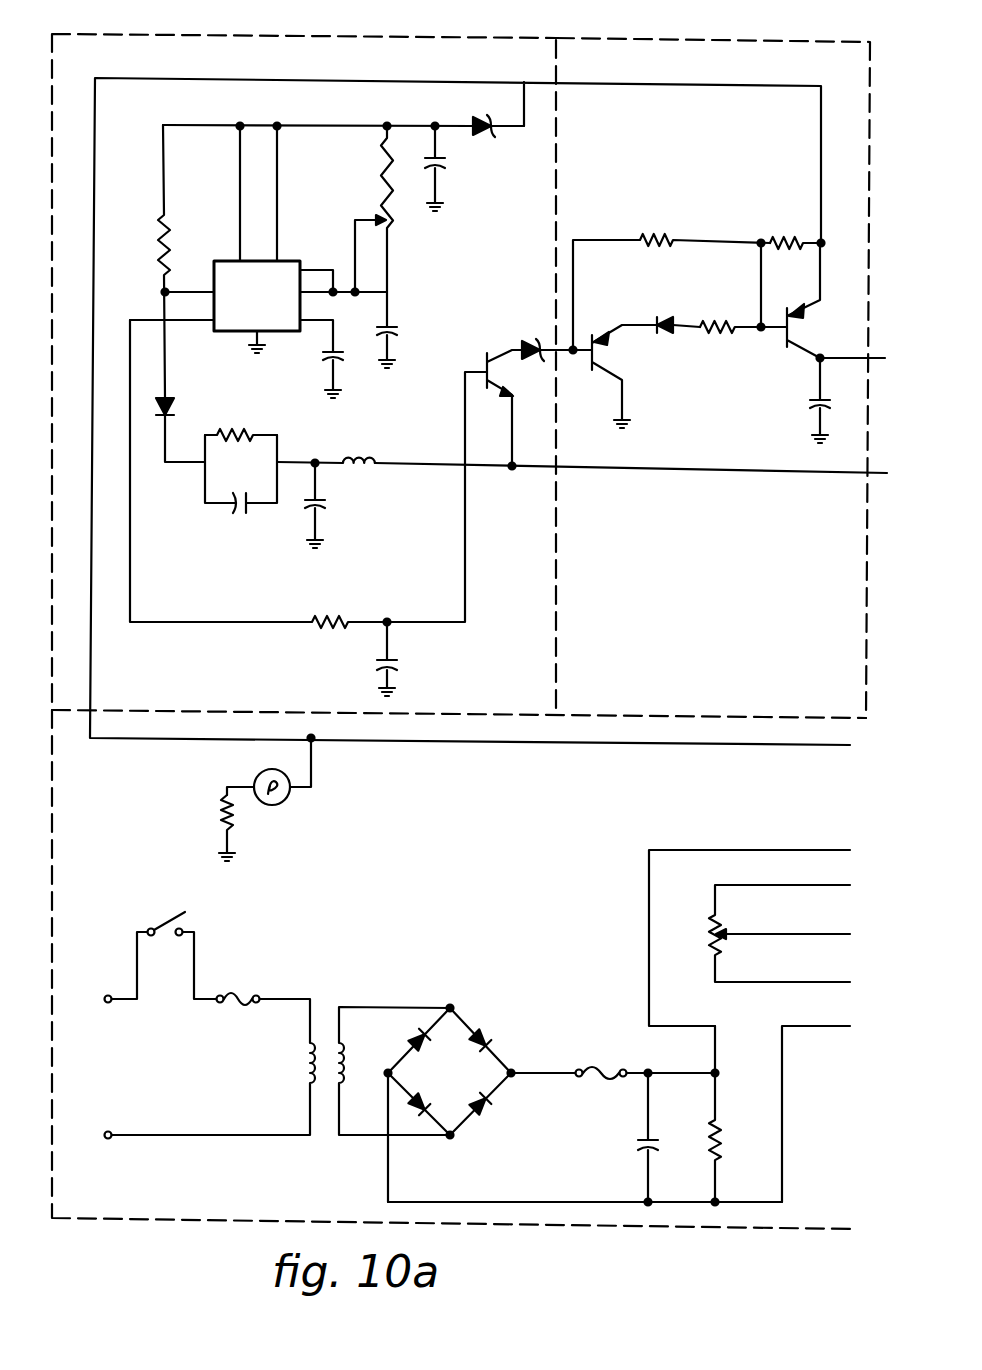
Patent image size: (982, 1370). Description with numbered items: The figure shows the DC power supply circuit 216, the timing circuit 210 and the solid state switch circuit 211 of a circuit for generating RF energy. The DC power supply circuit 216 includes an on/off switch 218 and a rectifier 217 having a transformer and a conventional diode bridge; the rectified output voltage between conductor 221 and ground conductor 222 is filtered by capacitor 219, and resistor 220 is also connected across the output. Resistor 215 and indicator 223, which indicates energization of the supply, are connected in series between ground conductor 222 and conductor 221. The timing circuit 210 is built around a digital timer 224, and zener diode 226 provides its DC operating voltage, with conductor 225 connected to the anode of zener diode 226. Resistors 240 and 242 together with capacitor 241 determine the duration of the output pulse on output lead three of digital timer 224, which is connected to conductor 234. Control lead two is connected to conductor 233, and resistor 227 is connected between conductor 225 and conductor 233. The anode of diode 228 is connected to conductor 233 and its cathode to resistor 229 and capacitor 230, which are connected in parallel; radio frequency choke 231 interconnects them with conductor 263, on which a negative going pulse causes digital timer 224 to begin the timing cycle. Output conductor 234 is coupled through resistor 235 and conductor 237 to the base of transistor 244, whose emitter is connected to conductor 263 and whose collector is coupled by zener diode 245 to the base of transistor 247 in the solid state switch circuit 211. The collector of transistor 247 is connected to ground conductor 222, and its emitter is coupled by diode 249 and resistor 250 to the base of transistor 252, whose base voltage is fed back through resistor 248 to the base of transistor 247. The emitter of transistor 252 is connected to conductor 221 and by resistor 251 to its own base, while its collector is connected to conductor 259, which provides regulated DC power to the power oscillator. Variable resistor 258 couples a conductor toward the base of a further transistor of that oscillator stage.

The timing circuit 210 is at (306, 38).
The solid state switch circuit 211 is at (698, 40).
The resistor 215 is at (236, 820).
The DC power supply circuit 216 is at (730, 1232).
The rectifier 217 is at (374, 1000).
The on/off switch 218 is at (152, 928).
The capacitor 219 is at (644, 1140).
The resistor 220 is at (720, 1148).
The conductor 221 is at (680, 88).
The ground conductor 222 is at (236, 858).
The indicator 223 is at (286, 796).
The digital timer 224 is at (292, 261).
The conductor 225 is at (228, 98).
The zener diode 226 is at (478, 118).
The resistor 227 is at (172, 242).
The diode 228 is at (176, 408).
The resistor 229 is at (248, 432).
The capacitor 230 is at (232, 510).
The radio frequency choke 231 is at (360, 462).
The conductor 233 is at (162, 290).
The conductor 234 is at (188, 328).
The resistor 235 is at (340, 620).
The conductor 237 is at (464, 592).
The resistor 240 is at (392, 225).
The capacitor 241 is at (442, 160).
The resistor 242 is at (384, 164).
The transistor 244 is at (487, 352).
The zener diode 245 is at (530, 339).
The transistor 247 is at (600, 375).
The resistor 248 is at (686, 216).
The diode 249 is at (666, 340).
The resistor 250 is at (720, 338).
The resistor 251 is at (782, 240).
The transistor 252 is at (796, 348).
The variable resistor 258 is at (706, 932).
The conductor 259 is at (853, 358).
The conductor 263 is at (428, 474).